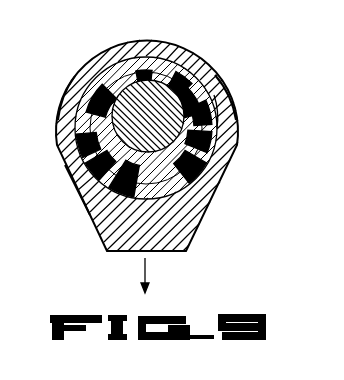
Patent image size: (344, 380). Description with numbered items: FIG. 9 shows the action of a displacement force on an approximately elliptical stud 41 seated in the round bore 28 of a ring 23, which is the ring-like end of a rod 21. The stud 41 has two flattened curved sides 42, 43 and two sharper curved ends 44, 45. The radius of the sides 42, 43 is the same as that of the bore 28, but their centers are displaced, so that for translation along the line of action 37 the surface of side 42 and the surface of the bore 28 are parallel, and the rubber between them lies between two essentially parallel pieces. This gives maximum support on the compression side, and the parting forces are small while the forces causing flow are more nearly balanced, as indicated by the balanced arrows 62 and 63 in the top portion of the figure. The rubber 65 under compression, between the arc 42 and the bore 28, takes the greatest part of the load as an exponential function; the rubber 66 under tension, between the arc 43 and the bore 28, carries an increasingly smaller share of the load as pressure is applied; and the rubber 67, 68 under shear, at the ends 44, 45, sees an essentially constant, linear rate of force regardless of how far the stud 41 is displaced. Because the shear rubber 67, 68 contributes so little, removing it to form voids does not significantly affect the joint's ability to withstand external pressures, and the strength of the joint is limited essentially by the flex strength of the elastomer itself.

The rod 21 is at (190, 236).
The ring 23 is at (232, 107).
The bore 28 is at (200, 103).
The line of action 37 is at (160, 275).
The stud 41 is at (135, 128).
The flattened curved side 42 is at (156, 86).
The flattened curved side 43 is at (190, 180).
The sharper curved end 44 is at (59, 101).
The sharper curved end 45 is at (214, 105).
The balanced arrow 62 is at (195, 90).
The balanced arrow 63 is at (205, 80).
The rubber under compression 65 is at (146, 80).
The rubber under tension 66 is at (88, 207).
The rubber under shear 67 is at (79, 124).
The rubber under shear 68 is at (213, 168).